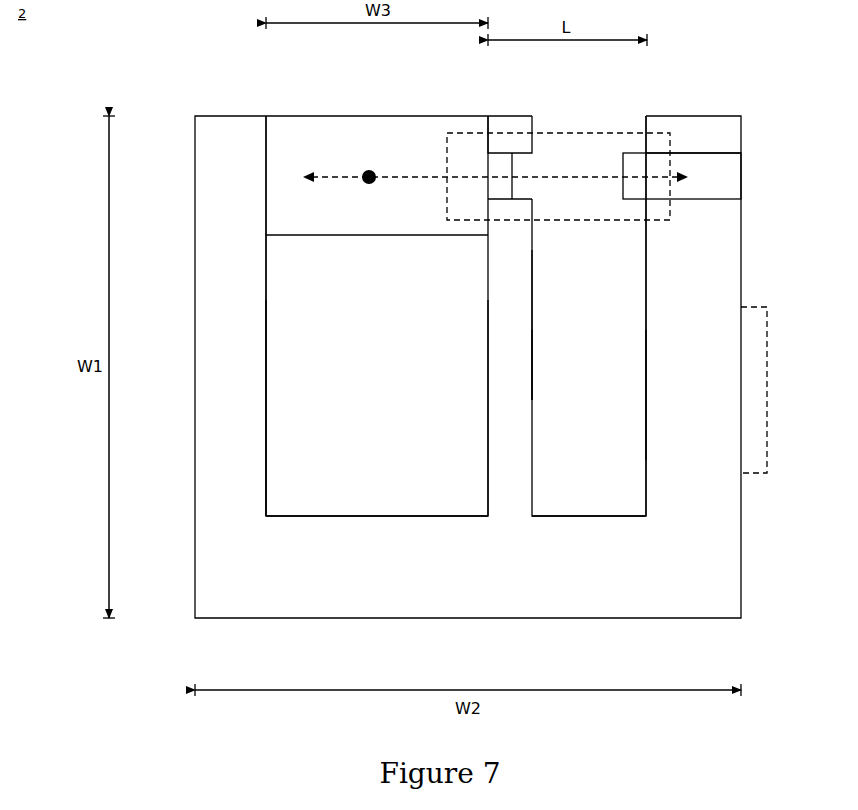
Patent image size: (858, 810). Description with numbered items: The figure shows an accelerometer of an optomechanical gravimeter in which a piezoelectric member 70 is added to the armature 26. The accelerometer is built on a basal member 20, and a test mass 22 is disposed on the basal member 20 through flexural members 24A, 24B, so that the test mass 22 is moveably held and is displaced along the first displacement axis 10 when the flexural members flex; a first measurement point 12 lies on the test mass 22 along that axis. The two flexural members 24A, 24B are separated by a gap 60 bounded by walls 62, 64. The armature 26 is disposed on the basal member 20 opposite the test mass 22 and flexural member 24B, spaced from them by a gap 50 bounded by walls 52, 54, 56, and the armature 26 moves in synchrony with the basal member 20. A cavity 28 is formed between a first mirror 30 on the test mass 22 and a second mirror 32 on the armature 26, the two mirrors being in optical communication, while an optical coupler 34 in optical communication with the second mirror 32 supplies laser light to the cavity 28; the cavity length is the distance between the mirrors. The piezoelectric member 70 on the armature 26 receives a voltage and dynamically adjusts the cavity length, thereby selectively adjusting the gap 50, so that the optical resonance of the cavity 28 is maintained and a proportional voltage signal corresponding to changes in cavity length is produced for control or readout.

The first displacement axis 10 is at (327, 175).
The first measurement point 12 is at (369, 170).
The basal member 20 is at (447, 605).
The test mass 22 is at (325, 133).
The flexural member 24A is at (227, 315).
The flexural member 24B is at (532, 316).
The armature 26 is at (722, 133).
The cavity 28 is at (562, 220).
The first mirror 30 is at (500, 162).
The second mirror 32 is at (635, 162).
The optical coupler 34 is at (698, 160).
The gap 50 is at (608, 503).
The wall 52 is at (532, 365).
The wall 54 is at (646, 418).
The wall 56 is at (568, 515).
The gap 60 is at (333, 499).
The wall 62 is at (266, 418).
The wall 64 is at (488, 418).
The piezoelectric member 70 is at (757, 452).